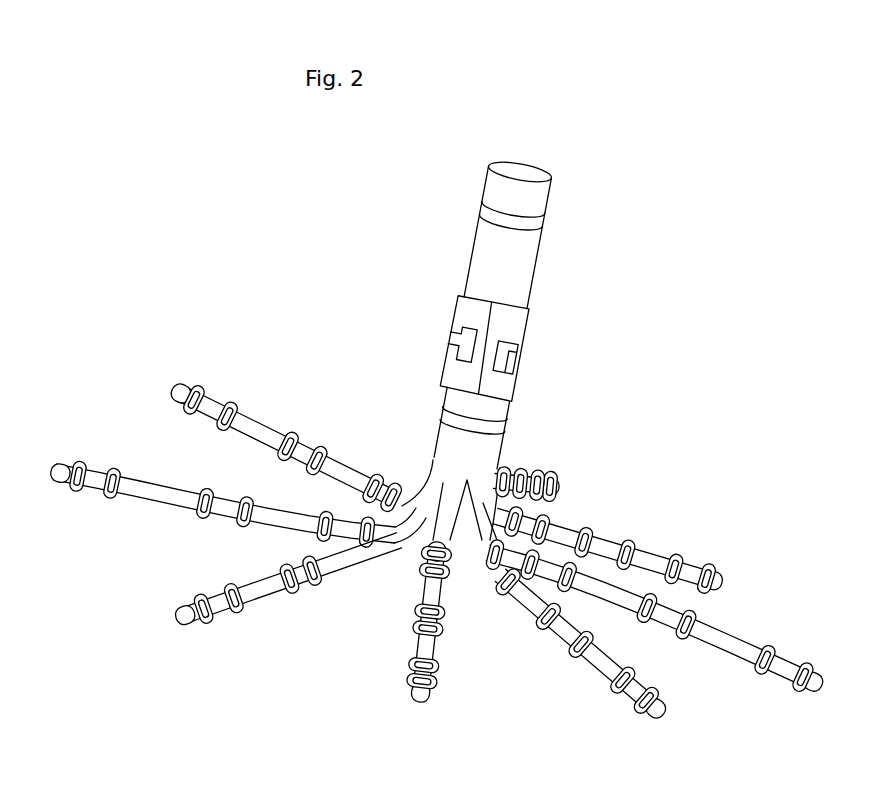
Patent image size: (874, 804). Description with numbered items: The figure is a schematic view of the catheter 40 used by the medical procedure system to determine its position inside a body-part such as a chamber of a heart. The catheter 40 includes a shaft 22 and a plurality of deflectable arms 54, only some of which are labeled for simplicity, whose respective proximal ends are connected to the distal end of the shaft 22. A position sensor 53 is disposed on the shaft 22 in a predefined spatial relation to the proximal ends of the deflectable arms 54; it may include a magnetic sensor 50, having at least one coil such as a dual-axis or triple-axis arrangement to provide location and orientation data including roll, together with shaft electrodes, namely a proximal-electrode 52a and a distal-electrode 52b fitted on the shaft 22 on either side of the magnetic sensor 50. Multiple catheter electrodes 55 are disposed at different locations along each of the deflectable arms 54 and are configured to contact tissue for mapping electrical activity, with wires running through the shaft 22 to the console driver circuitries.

The catheter 40 is at (232, 258).
The shaft 22 is at (530, 275).
The position sensor 53 is at (459, 181).
The proximal-electrode 52a is at (548, 211).
The magnetic sensor 50 is at (518, 372).
The distal-electrode 52b is at (505, 432).
The deflectable arms 54 is at (437, 568).
The catheter electrodes 55 is at (799, 660).